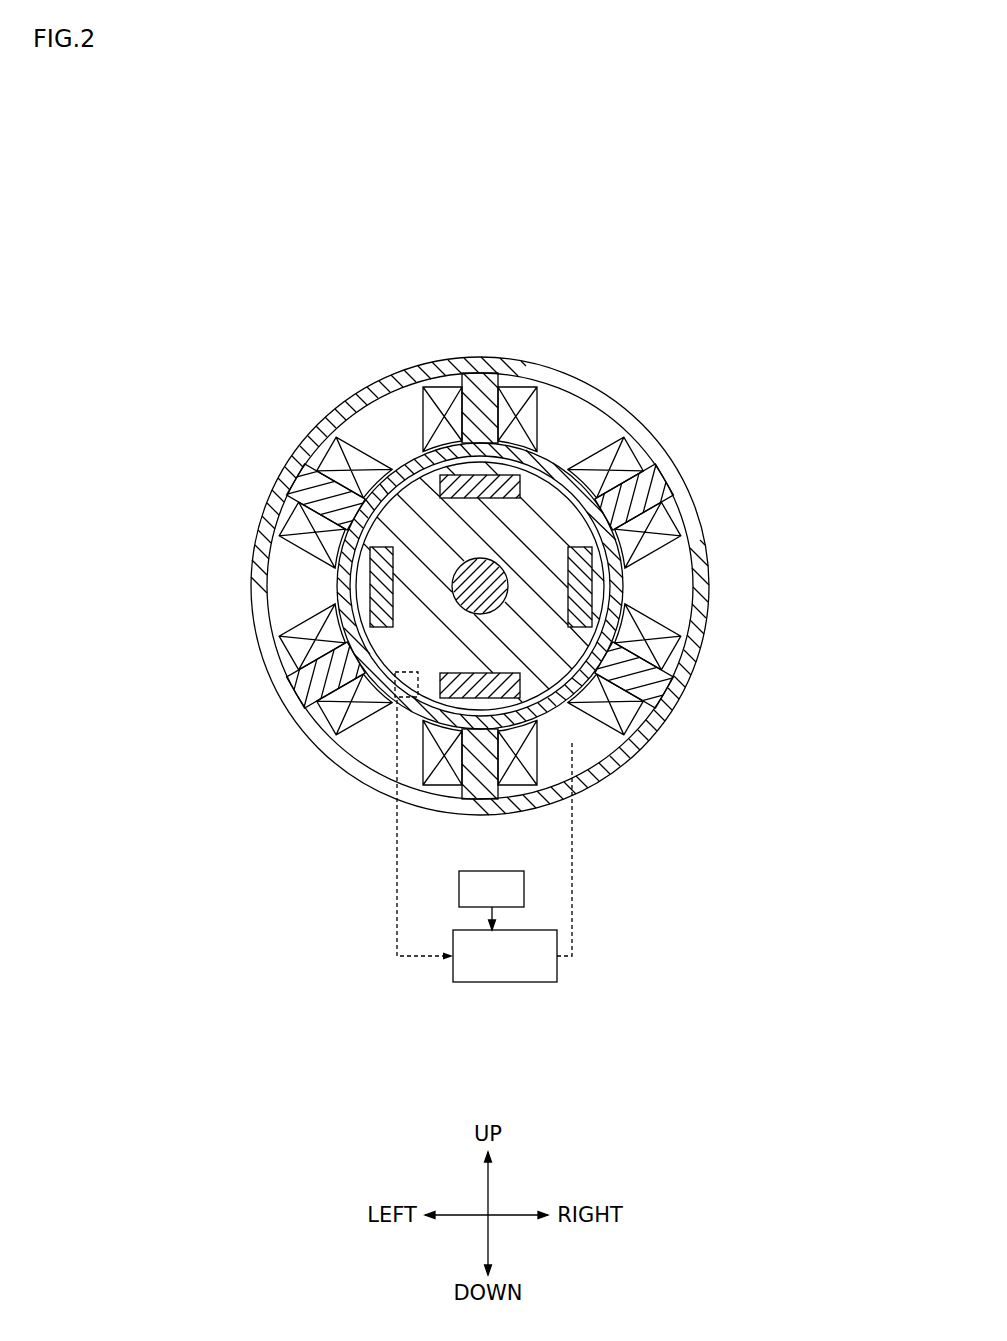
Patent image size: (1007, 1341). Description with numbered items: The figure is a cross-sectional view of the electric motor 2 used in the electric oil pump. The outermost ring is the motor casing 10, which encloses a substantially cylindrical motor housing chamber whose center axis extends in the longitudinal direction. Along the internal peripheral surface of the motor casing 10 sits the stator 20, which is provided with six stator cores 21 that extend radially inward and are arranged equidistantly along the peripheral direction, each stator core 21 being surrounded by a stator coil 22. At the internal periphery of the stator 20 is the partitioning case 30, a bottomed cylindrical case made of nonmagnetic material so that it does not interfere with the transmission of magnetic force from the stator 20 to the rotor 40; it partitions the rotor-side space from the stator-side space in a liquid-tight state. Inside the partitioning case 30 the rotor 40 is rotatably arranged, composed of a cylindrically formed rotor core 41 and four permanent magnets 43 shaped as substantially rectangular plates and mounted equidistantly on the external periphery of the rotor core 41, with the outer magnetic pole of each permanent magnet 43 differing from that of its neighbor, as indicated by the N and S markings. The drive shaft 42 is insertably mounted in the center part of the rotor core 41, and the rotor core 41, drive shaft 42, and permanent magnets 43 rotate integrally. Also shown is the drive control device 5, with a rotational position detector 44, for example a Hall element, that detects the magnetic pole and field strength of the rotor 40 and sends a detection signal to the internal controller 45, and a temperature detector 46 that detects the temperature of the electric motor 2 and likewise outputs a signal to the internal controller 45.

The electric motor 2 is at (720, 262).
The drive control device 5 is at (531, 954).
The motor casing 10 is at (382, 372).
The stator 20 is at (472, 587).
The stator core 21 is at (479, 395).
The stator coil 22 is at (516, 396).
The partitioning case 30 is at (547, 596).
The rotor 40 is at (640, 738).
The rotor core 41 is at (445, 505).
The drive shaft 42 is at (508, 570).
The permanent magnet 43 is at (422, 510).
The rotational position detector 44 is at (405, 693).
The internal controller 45 is at (505, 985).
The temperature detector 46 is at (459, 888).